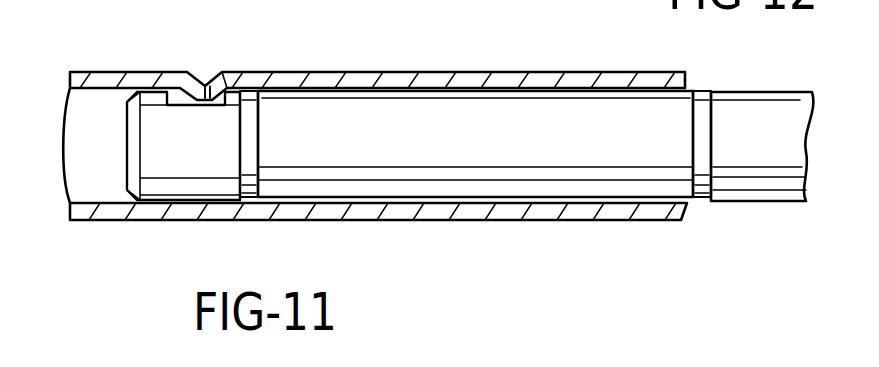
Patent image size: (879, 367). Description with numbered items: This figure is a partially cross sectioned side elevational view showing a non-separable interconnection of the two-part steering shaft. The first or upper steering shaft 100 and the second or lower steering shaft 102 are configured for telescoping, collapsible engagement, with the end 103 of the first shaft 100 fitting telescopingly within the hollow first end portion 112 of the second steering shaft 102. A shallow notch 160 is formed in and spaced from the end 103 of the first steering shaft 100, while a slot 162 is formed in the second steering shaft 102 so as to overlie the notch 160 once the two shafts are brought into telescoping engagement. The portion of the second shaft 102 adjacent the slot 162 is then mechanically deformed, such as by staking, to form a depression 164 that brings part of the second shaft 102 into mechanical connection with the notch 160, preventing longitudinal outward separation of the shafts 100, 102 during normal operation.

The first steering shaft 100 is at (465, 114).
The second steering shaft 102 is at (428, 27).
The end of first shaft 103 is at (128, 174).
The hollow first end portion 112 is at (692, 211).
The shallow notch 160 is at (173, 89).
The slot 162 is at (208, 85).
The depression 164 is at (216, 82).